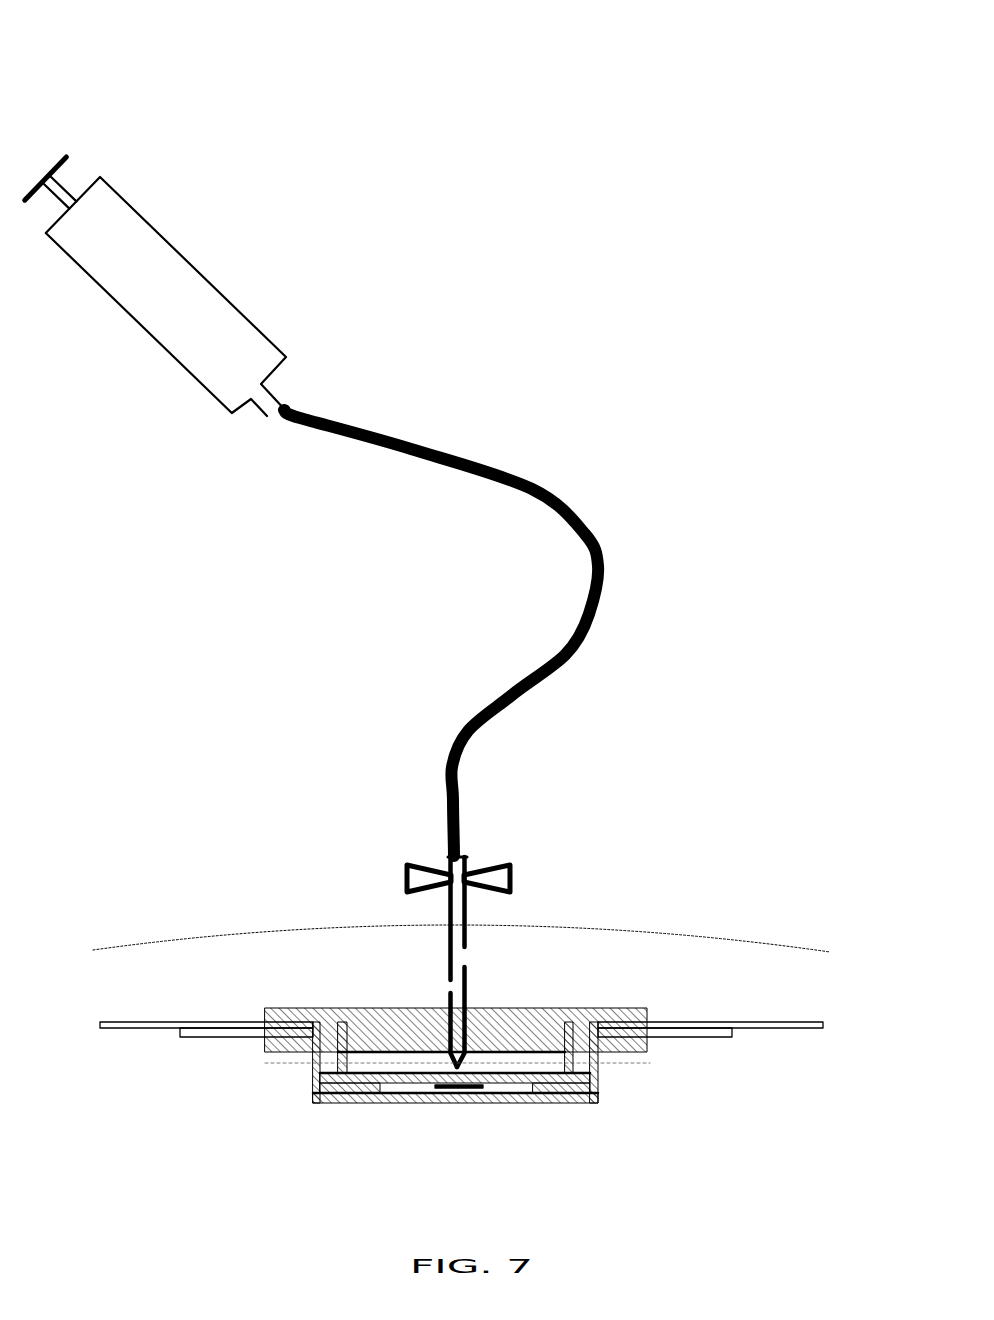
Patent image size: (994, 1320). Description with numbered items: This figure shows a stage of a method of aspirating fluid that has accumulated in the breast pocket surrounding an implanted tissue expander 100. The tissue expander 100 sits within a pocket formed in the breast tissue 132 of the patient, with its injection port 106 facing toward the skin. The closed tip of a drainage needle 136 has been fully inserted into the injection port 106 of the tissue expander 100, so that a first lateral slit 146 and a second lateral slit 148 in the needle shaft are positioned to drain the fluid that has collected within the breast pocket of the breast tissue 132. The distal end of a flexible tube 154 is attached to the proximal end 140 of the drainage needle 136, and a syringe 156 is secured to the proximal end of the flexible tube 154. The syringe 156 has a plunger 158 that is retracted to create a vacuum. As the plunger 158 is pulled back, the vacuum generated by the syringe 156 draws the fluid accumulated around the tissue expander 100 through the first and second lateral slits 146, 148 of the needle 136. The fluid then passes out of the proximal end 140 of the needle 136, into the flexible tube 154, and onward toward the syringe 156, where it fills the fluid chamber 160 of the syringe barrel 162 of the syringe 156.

The tissue expander 100 is at (757, 984).
The injection port 106 is at (267, 982).
The breast tissue 132 is at (168, 1003).
The drainage needle 136 is at (378, 871).
The proximal end 140 is at (545, 855).
The first lateral slit 146 is at (426, 988).
The second lateral slit 148 is at (494, 954).
The flexible tube 154 is at (567, 499).
The syringe 156 is at (219, 217).
The plunger 158 is at (67, 155).
The fluid chamber 160 is at (188, 304).
The syringe barrel 162 is at (120, 314).